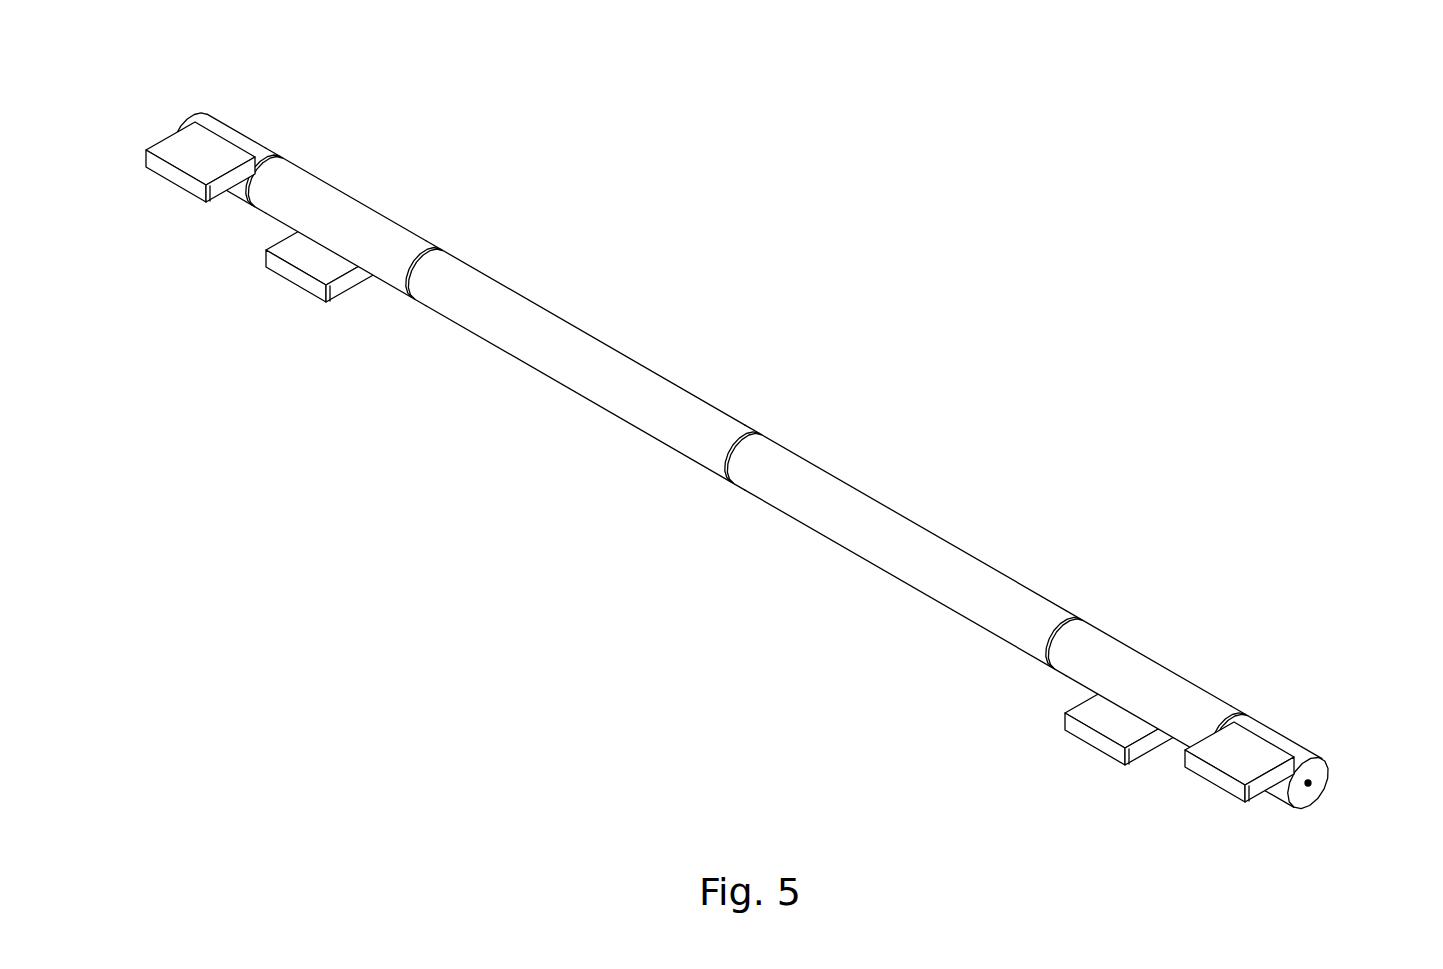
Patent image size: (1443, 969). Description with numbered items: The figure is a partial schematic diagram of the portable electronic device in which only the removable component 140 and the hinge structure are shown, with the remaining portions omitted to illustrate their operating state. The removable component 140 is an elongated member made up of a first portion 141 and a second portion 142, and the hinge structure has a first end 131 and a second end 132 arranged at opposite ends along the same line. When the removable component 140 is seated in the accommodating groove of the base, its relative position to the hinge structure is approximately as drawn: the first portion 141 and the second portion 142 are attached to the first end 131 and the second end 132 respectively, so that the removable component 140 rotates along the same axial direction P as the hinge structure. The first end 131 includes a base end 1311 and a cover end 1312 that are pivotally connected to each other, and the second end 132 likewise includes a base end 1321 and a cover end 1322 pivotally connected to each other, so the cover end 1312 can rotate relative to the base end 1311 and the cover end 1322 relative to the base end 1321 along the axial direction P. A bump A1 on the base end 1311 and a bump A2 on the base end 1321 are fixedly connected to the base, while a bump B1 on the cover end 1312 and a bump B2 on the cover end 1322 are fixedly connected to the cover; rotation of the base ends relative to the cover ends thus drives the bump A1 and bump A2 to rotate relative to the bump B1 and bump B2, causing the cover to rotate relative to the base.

The first end 131 is at (250, 37).
The base end 1311 is at (404, 248).
The cover end 1312 is at (228, 137).
The second end 132 is at (1130, 546).
The base end 1321 is at (1112, 646).
The cover end 1322 is at (1287, 746).
The removable component 140 is at (690, 272).
The first portion 141 is at (660, 400).
The second portion 142 is at (840, 497).
The bump A1 is at (293, 278).
The bump A2 is at (1090, 738).
The bump B1 is at (177, 177).
The bump B2 is at (1212, 777).
The axial direction P is at (57, 62).